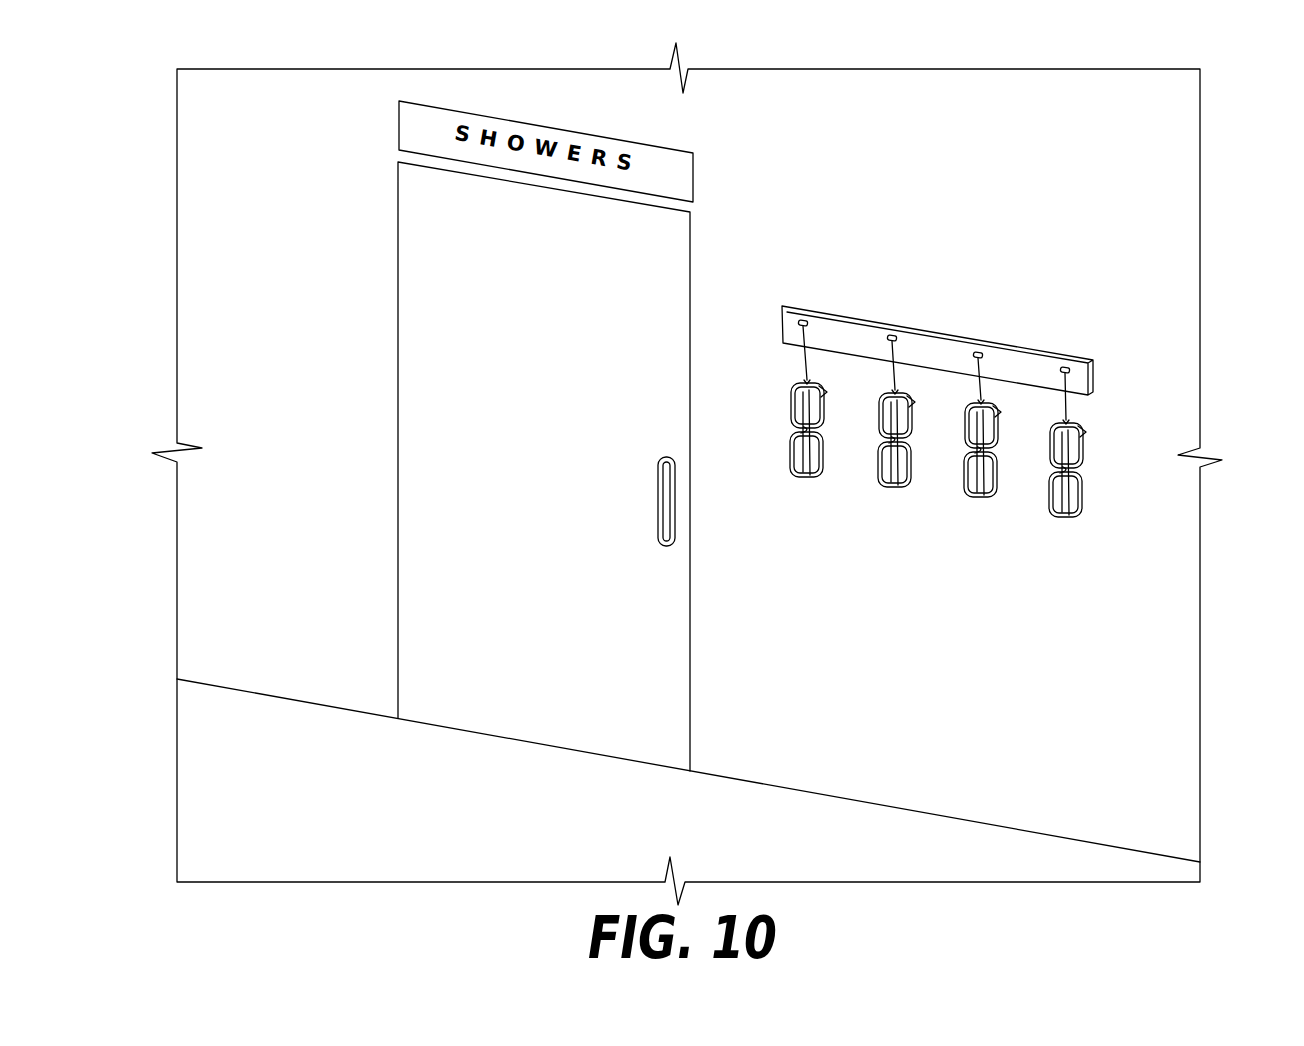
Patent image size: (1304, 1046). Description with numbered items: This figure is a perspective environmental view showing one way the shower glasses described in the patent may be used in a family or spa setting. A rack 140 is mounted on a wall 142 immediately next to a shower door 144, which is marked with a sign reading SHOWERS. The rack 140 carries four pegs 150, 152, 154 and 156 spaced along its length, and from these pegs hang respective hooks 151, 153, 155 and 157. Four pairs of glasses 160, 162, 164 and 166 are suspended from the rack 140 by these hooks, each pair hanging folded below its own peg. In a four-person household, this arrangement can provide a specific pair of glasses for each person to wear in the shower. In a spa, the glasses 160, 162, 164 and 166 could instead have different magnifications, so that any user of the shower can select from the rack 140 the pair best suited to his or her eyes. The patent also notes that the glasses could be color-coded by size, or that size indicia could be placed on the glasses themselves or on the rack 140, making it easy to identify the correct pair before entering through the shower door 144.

The rack 140 is at (939, 351).
The wall 142 is at (1120, 142).
The shower door 144 is at (550, 691).
The peg 150 is at (1065, 367).
The hook 151 is at (1070, 404).
The peg 152 is at (978, 352).
The hook 153 is at (983, 386).
The peg 154 is at (892, 335).
The hook 155 is at (897, 372).
The peg 156 is at (802, 320).
The hook 157 is at (813, 358).
The pair of glasses 160 is at (1048, 515).
The pair of glasses 162 is at (965, 500).
The pair of glasses 164 is at (878, 487).
The pair of glasses 166 is at (793, 472).